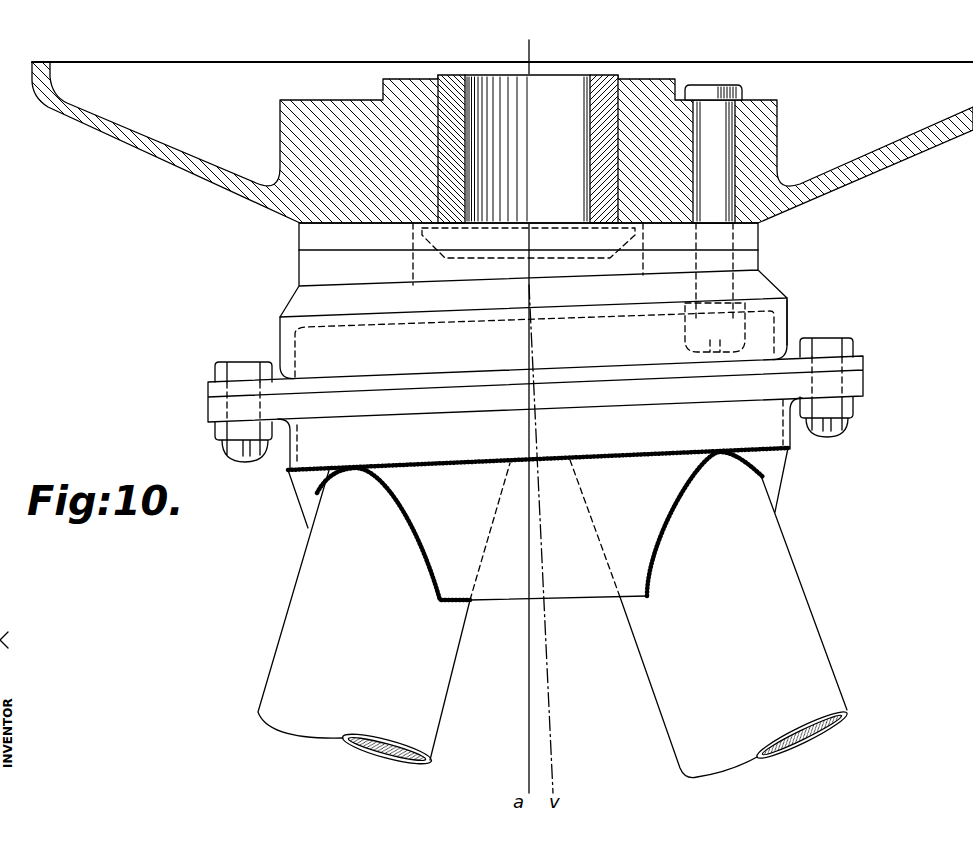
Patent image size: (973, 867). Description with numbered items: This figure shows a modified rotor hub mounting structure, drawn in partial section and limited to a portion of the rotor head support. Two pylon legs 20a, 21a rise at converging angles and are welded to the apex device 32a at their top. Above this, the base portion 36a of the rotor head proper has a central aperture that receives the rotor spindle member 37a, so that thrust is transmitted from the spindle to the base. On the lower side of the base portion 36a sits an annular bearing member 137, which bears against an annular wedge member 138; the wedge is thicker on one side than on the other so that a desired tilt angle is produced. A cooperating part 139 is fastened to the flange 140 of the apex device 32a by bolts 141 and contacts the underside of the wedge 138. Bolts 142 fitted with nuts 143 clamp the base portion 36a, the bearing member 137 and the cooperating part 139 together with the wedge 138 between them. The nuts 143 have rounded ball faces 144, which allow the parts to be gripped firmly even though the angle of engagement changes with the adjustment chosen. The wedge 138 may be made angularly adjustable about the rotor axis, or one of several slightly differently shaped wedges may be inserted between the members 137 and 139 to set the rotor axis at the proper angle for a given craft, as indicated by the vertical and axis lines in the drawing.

The pylon leg 20a is at (305, 610).
The pylon leg 21a is at (785, 618).
The apex device 32a is at (760, 433).
The base portion of the rotor head 36a is at (150, 153).
The rotor spindle member 37a is at (554, 88).
The annular bearing member 137 is at (747, 241).
The annular wedge member 138 is at (310, 262).
The cooperating part 139 is at (780, 278).
The flange 140 is at (857, 383).
The bolts 141 is at (213, 364).
The bolts 142 is at (715, 143).
The nuts 143 is at (792, 317).
The rounded faces 144 is at (692, 303).